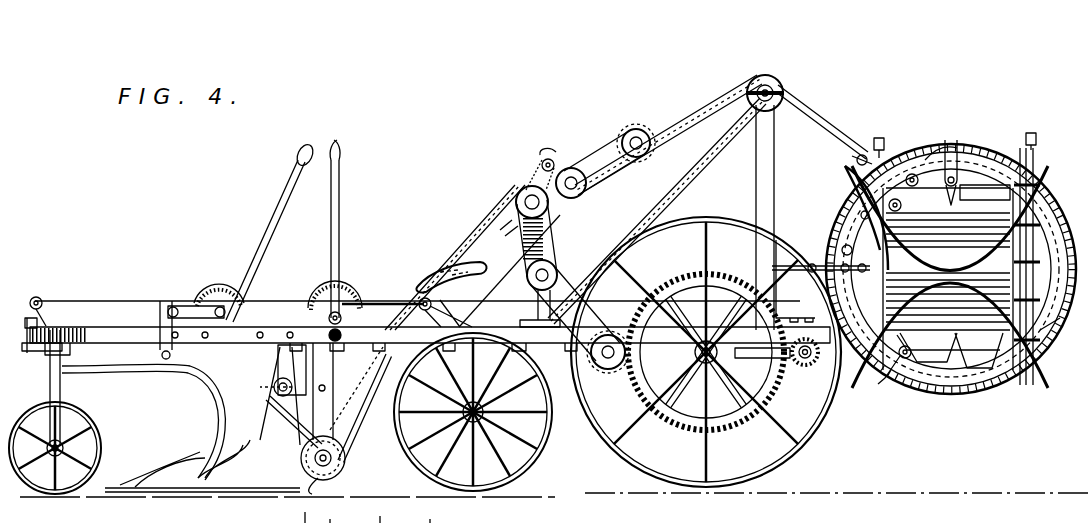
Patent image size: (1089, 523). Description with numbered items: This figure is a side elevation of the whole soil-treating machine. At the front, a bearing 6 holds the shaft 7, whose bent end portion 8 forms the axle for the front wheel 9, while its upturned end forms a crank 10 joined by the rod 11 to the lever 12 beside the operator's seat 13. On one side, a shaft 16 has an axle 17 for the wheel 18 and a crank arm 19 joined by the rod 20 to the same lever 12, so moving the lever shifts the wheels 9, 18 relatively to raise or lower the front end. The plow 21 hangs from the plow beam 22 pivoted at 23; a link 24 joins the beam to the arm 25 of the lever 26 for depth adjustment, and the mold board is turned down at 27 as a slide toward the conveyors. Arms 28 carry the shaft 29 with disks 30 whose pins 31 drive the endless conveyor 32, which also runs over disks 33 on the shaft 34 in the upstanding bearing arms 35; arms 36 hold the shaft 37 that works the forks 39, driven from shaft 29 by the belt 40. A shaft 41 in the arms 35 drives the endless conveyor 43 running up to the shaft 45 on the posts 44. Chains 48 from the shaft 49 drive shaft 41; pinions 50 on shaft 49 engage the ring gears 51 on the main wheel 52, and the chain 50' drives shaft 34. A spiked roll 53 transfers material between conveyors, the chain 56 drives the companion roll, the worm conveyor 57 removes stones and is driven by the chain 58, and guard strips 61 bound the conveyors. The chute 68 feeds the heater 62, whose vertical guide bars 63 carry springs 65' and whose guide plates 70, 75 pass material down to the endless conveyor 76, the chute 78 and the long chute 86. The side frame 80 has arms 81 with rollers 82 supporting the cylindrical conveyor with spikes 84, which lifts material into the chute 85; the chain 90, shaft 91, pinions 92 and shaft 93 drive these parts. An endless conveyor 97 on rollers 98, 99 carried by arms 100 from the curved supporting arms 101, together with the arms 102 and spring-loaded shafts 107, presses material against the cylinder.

The bearing 6 is at (70, 350).
The shaft 7 is at (48, 328).
The downwardly and laterally extended end portion 8 is at (66, 446).
The front wheel 9 is at (94, 450).
The crank 10 is at (42, 300).
The rod 11 is at (125, 300).
The lever 12 is at (340, 232).
The operator's seat 13 is at (433, 272).
The shaft 16 is at (500, 411).
The axle 17 is at (446, 415).
The wheel 18 is at (540, 455).
The crank arm 19 is at (436, 322).
The rod 20 is at (378, 302).
The plow 21 is at (163, 488).
The plow beam 22 is at (164, 378).
The pivot 23 is at (50, 380).
The link 24 is at (178, 350).
The arm 25 is at (190, 309).
The lever 26 is at (265, 245).
The downturned mold board portion 27 is at (226, 480).
The arms 28 is at (336, 432).
The shaft 29 is at (326, 472).
The disks 30 is at (312, 478).
The pins or teeth 31 is at (340, 472).
The endless conveyor 32 is at (355, 448).
The disks 33 is at (545, 157).
The shaft 34 is at (528, 196).
The bearing arms 35 is at (570, 167).
The arms 36 is at (300, 382).
The shaft 37 is at (274, 390).
The forks 39 is at (274, 355).
The belt 40 is at (304, 416).
The shaft 41 is at (560, 270).
The endless conveyor 43 is at (712, 180).
The posts 44 is at (772, 222).
The shaft 45 is at (786, 95).
The chains 48 is at (625, 303).
The shaft 49 is at (612, 370).
The pinions 50 is at (601, 320).
The chain 50' is at (481, 205).
The ring gears 51 is at (732, 422).
The main or supporting wheel 52 is at (822, 425).
The roll 53 is at (618, 172).
The chain 56 is at (580, 236).
The worm conveyor 57 is at (640, 136).
The chain 58 is at (632, 126).
The guard strips 61 is at (448, 248).
The heater 62 is at (956, 196).
The vertical guide bars 63 is at (860, 200).
The springs 65' is at (755, 312).
The chute or trough 68 is at (850, 130).
The guide plates 70 is at (948, 279).
The guide plates 75 is at (948, 287).
The endless conveyor 76 is at (1064, 325).
The chute 78 is at (930, 362).
The frame 80 is at (1048, 206).
The arms 81 is at (1050, 362).
The rollers 82 is at (1066, 242).
The teeth or spikes 84 is at (1014, 385).
The chute 85 is at (985, 196).
The chute 86 is at (960, 372).
The chain 90 is at (814, 368).
The shaft 91 is at (783, 360).
The pinions 92 is at (795, 281).
The shaft 93 is at (1034, 165).
The endless conveyor 97 is at (850, 240).
The roller 98 is at (915, 172).
The roller 99 is at (902, 360).
The arms 100 is at (888, 382).
The curved supporting arms 101 is at (952, 138).
The arms 102 is at (773, 268).
The shafts 107 is at (852, 160).